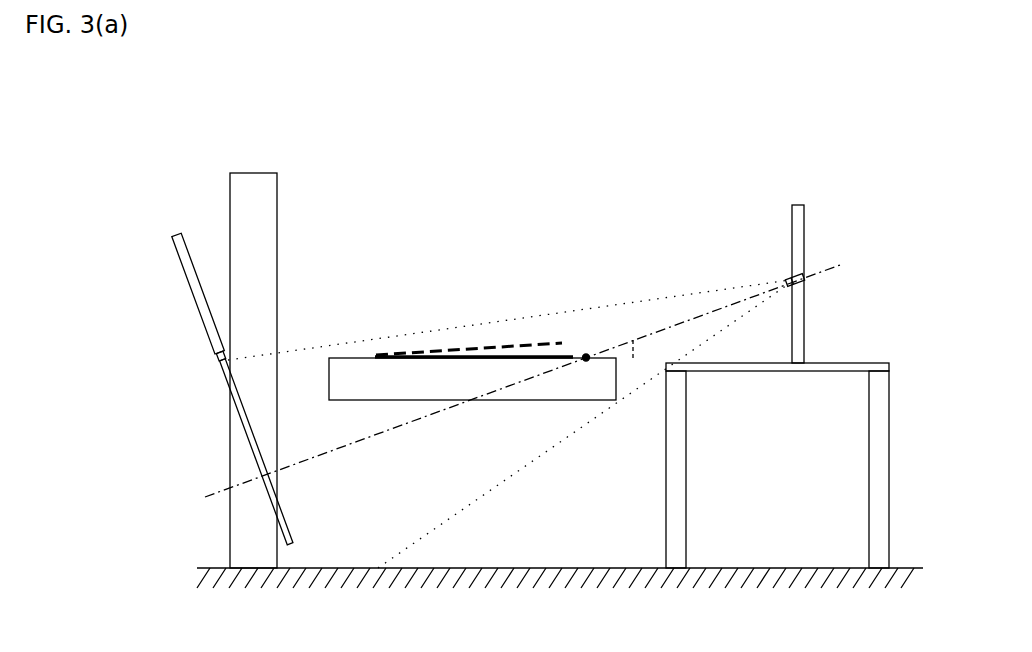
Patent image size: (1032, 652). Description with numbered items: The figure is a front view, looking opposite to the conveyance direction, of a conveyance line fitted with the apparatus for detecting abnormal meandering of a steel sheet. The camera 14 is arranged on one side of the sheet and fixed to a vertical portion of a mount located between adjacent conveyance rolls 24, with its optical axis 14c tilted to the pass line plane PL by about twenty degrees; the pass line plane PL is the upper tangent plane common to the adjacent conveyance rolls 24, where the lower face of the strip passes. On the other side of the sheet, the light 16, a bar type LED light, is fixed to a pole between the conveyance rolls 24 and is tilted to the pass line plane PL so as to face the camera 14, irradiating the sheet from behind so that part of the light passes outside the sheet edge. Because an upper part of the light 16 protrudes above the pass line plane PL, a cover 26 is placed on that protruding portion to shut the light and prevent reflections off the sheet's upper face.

The camera 14 is at (799, 272).
The optical axis 14c is at (693, 317).
The light 16 is at (253, 446).
The conveyance rolls 24 is at (388, 383).
The cover 26 is at (182, 271).
The pass line plane PL is at (310, 357).